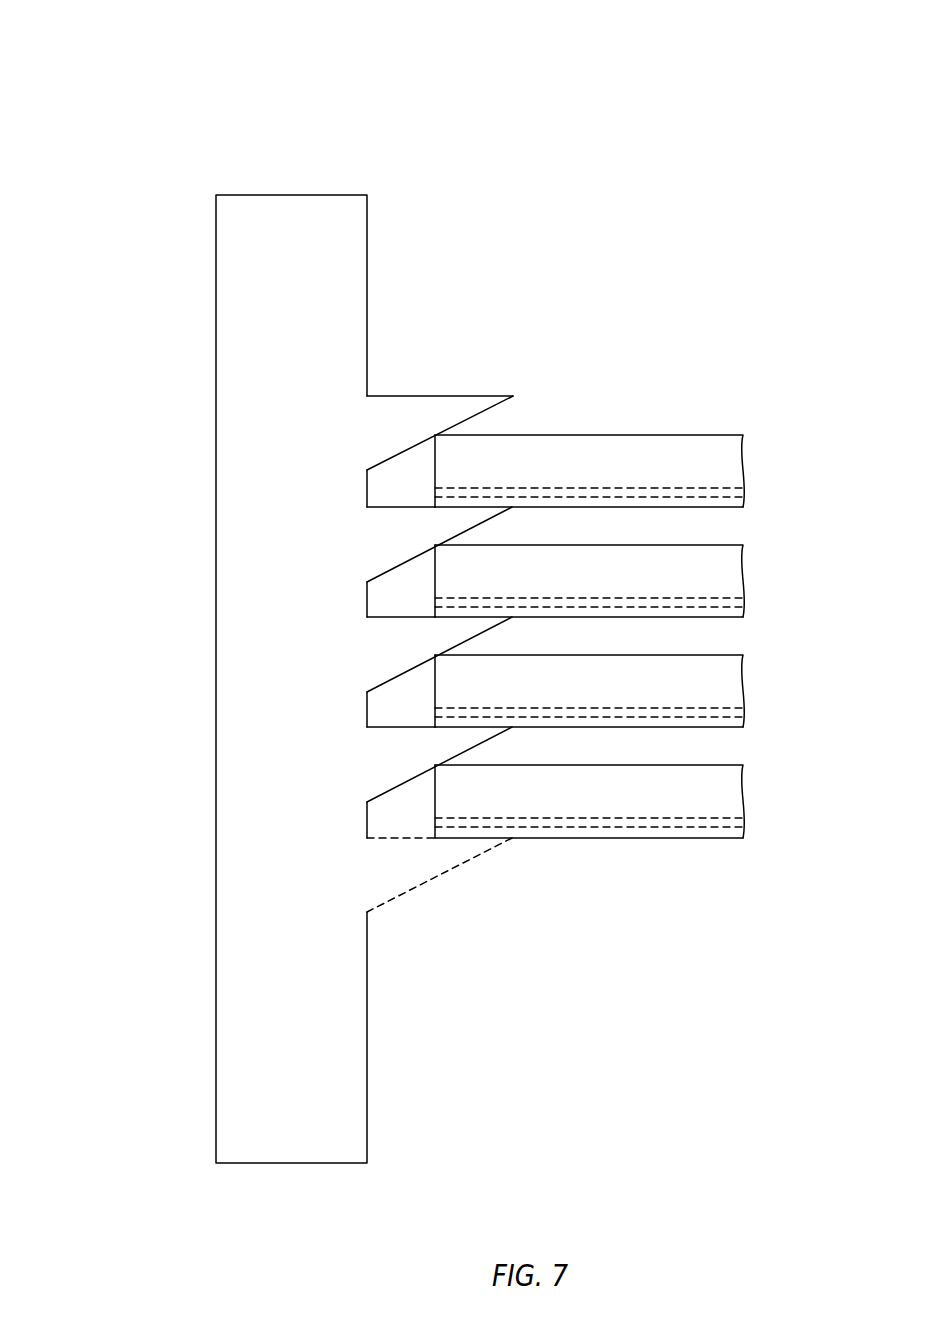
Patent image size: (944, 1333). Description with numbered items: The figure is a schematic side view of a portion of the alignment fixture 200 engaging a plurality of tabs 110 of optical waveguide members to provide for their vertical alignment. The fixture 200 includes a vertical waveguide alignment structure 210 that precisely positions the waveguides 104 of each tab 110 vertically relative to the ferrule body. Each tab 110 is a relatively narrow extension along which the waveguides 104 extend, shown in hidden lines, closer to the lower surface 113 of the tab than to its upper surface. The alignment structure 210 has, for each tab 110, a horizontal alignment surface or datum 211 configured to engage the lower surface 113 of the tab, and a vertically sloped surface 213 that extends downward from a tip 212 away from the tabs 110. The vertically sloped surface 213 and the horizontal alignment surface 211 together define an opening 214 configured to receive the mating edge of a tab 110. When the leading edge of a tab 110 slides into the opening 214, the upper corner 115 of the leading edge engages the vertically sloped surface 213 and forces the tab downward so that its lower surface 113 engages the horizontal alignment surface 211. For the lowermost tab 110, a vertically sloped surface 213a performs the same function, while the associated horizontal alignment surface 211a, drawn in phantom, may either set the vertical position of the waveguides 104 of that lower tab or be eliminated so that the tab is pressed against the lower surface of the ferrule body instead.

The fixture 200 is at (215, 78).
The vertical waveguide alignment structure 210 is at (410, 183).
The horizontal alignment surface 211 is at (427, 617).
The horizontal alignment surface 211a is at (415, 840).
The tip 212 is at (494, 396).
The vertically sloped surface 213 is at (485, 411).
The vertically sloped surface 213a is at (493, 737).
The opening 214 is at (390, 467).
The upper corner 115 is at (435, 435).
The tab 110 is at (745, 458).
The waveguides 104 is at (747, 492).
The lower surface 113 is at (630, 508).